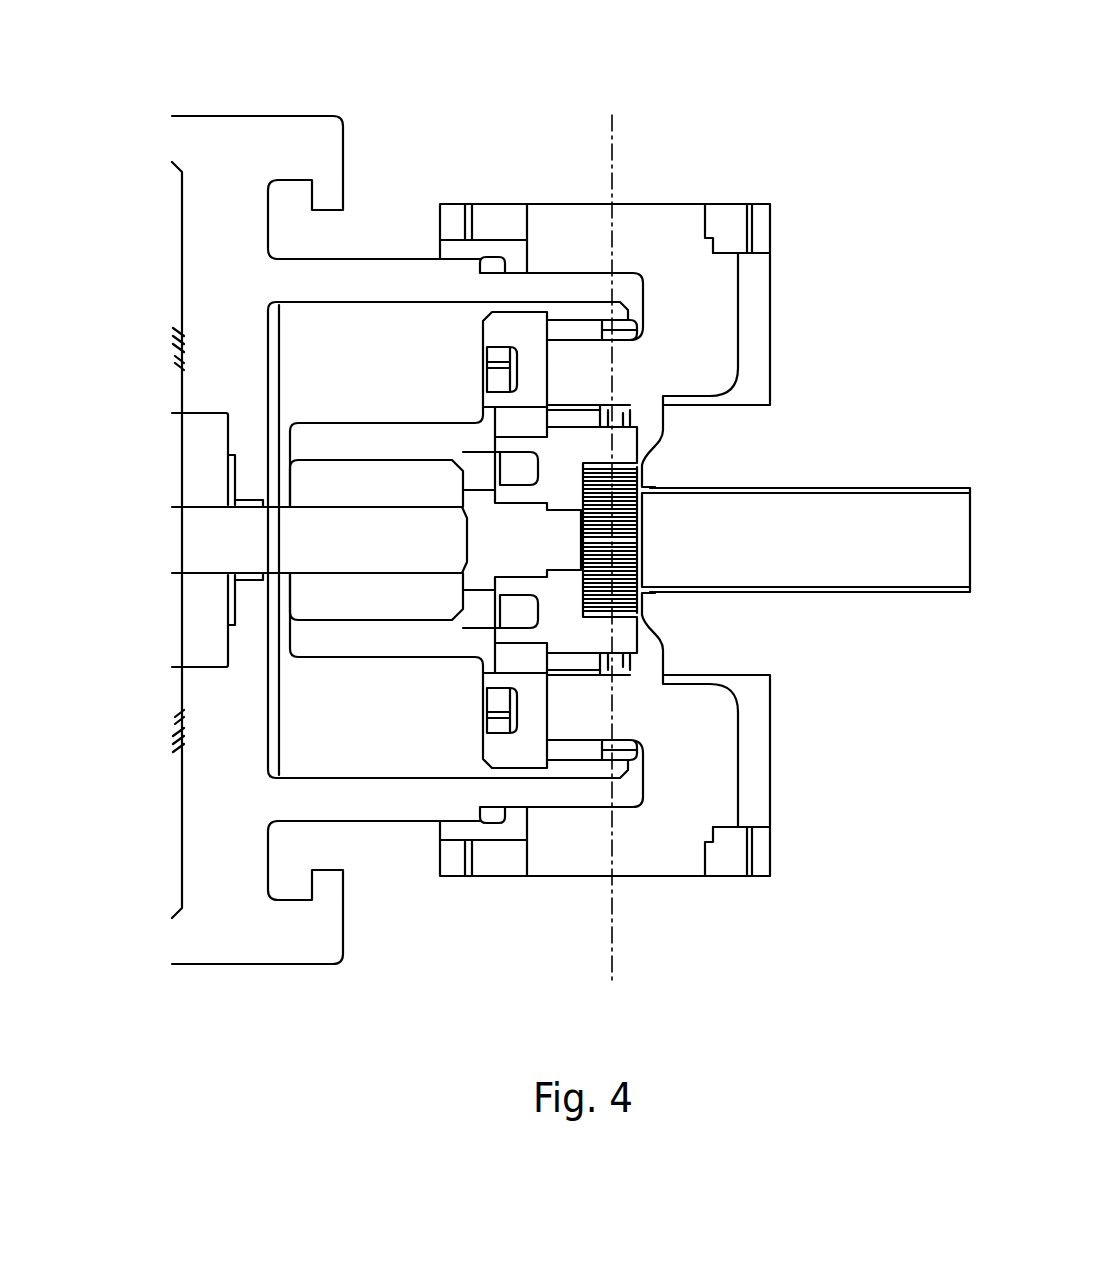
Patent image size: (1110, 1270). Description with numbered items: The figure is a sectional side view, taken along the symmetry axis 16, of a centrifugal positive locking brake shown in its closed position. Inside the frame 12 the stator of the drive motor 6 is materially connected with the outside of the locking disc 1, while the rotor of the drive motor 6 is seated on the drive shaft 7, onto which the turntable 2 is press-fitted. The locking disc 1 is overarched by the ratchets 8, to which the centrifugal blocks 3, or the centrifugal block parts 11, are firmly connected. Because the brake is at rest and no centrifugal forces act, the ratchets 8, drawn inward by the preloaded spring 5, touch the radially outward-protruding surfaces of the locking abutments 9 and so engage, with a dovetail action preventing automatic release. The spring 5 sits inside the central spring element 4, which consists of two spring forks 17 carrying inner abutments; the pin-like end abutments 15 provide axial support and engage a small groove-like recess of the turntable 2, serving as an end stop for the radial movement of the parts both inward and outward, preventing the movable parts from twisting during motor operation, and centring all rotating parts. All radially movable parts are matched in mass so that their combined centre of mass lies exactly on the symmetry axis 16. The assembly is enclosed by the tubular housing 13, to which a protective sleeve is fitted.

The locking disc 1 is at (443, 268).
The turntable 2 is at (490, 267).
The centrifugal blocks 3 is at (737, 446).
The centrifugal block parts 11 is at (724, 221).
The central spring element 4 is at (347, 540).
The spring forks 17 is at (578, 449).
The spring 5 is at (598, 530).
The drive motor 6 is at (193, 432).
The drive/output shaft 7 is at (209, 526).
The ratchet 8 is at (557, 266).
The locking abutment 9 is at (497, 326).
The frame 12 is at (230, 285).
The tubular housing 13 is at (262, 116).
The inner abutment, end abutment 15 is at (520, 437).
The symmetry axis 16 is at (612, 145).